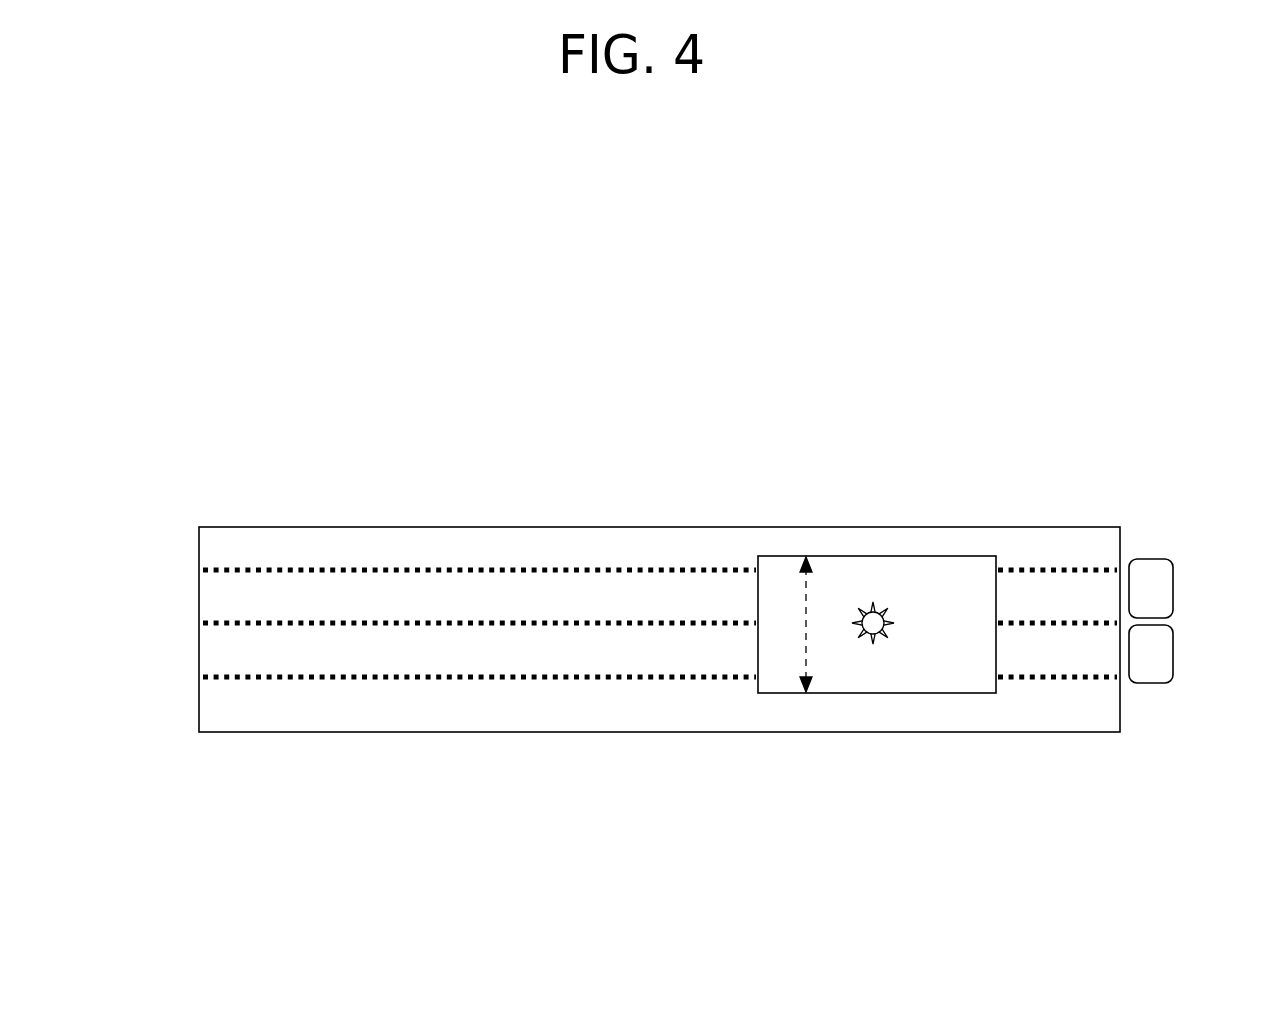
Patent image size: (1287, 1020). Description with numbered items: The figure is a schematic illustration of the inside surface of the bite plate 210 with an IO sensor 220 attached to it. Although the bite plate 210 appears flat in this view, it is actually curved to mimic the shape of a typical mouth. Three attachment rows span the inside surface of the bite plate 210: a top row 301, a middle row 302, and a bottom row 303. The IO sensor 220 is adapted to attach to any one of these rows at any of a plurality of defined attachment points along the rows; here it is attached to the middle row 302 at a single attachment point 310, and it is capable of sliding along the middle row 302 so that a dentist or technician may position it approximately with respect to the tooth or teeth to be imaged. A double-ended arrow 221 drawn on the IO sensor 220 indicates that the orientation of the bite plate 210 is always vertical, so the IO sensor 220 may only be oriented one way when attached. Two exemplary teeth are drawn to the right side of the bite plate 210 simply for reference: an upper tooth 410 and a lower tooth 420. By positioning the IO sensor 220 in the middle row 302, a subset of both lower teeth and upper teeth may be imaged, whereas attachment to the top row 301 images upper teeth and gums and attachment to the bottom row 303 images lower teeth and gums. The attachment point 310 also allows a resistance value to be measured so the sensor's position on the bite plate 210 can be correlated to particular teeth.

The bite plate 210 is at (447, 527).
The IO sensor 220 is at (949, 556).
The double-ended arrow 221 is at (802, 622).
The top row 301 is at (235, 568).
The middle row 302 is at (242, 622).
The bottom row 303 is at (248, 677).
The attachment point 310 is at (871, 623).
The upper tooth 410 is at (1156, 559).
The lower tooth 420 is at (1147, 683).